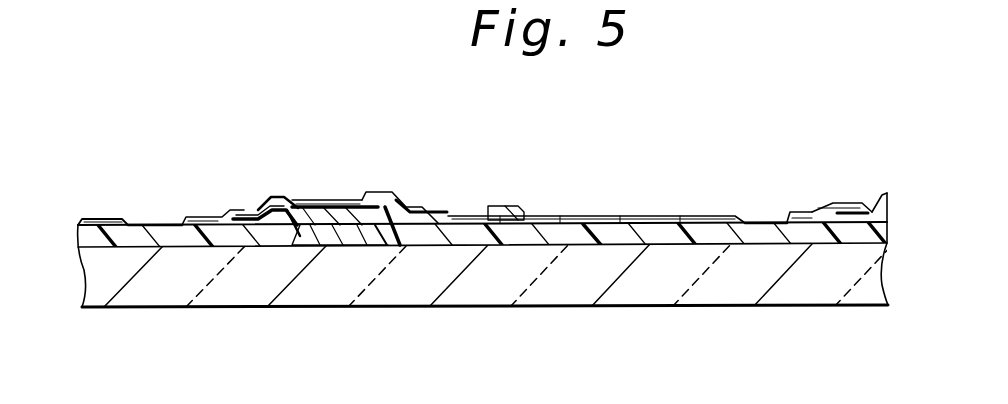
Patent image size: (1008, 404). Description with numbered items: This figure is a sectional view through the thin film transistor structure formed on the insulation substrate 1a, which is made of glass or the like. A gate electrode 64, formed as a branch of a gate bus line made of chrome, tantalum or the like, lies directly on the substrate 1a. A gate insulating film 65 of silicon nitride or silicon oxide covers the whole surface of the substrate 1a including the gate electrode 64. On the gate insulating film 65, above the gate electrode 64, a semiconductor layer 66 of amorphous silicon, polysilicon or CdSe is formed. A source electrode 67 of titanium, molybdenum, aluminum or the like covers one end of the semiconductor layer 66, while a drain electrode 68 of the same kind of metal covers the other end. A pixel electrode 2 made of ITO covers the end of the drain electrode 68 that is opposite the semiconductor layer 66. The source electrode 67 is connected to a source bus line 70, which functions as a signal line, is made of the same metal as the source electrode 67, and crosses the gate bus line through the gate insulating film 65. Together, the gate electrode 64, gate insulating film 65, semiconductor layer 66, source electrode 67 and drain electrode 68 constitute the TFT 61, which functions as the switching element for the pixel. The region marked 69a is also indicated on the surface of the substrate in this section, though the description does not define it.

The insulation substrate 1a is at (556, 292).
The pixel electrode 2 is at (100, 217).
The TFT 61 is at (430, 155).
The gate electrode 64 is at (300, 240).
The gate insulating film 65 is at (173, 235).
The semiconductor layer 66 is at (327, 200).
The source electrode 67 is at (233, 216).
The drain electrode 68 is at (425, 205).
The region of substrate surface 69a is at (152, 222).
The source bus line 70 is at (793, 212).